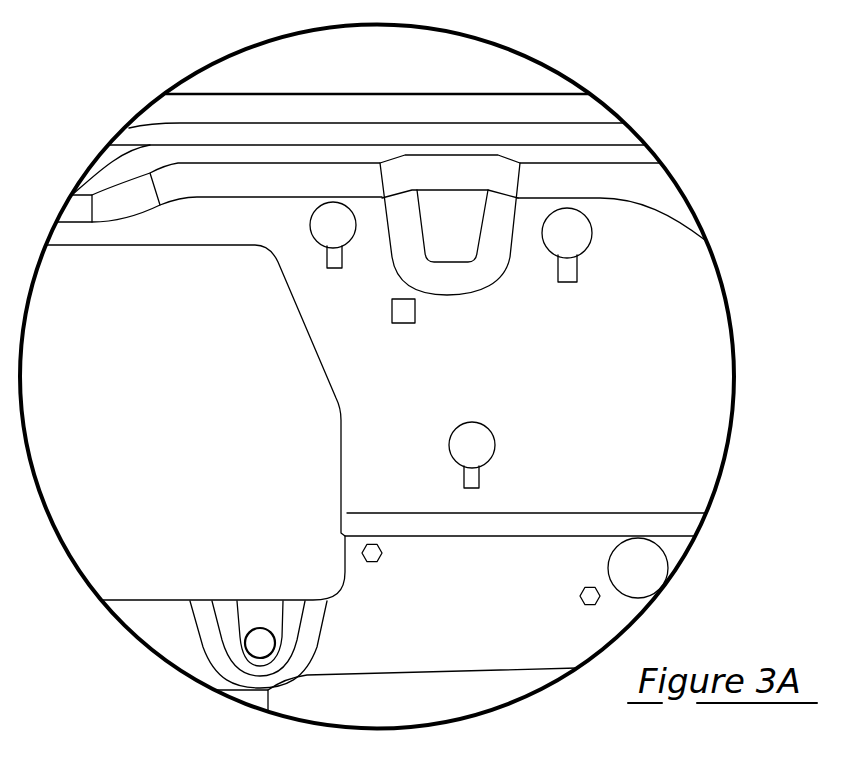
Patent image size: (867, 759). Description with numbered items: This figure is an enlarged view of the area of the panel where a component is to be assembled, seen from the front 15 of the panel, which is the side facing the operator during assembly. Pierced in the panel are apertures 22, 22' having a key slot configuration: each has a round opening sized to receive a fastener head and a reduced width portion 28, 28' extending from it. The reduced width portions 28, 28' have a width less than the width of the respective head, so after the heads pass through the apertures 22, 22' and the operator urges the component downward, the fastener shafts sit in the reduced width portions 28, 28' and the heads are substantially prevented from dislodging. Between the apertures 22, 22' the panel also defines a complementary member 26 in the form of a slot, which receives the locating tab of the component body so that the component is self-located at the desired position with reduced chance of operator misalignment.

The front of panel 15 is at (578, 633).
The aperture 22 is at (475, 258).
The aperture 22' is at (660, 218).
The complementary member 26 is at (410, 308).
The reduced width portion 28 is at (477, 372).
The reduced width portion 28' is at (623, 297).